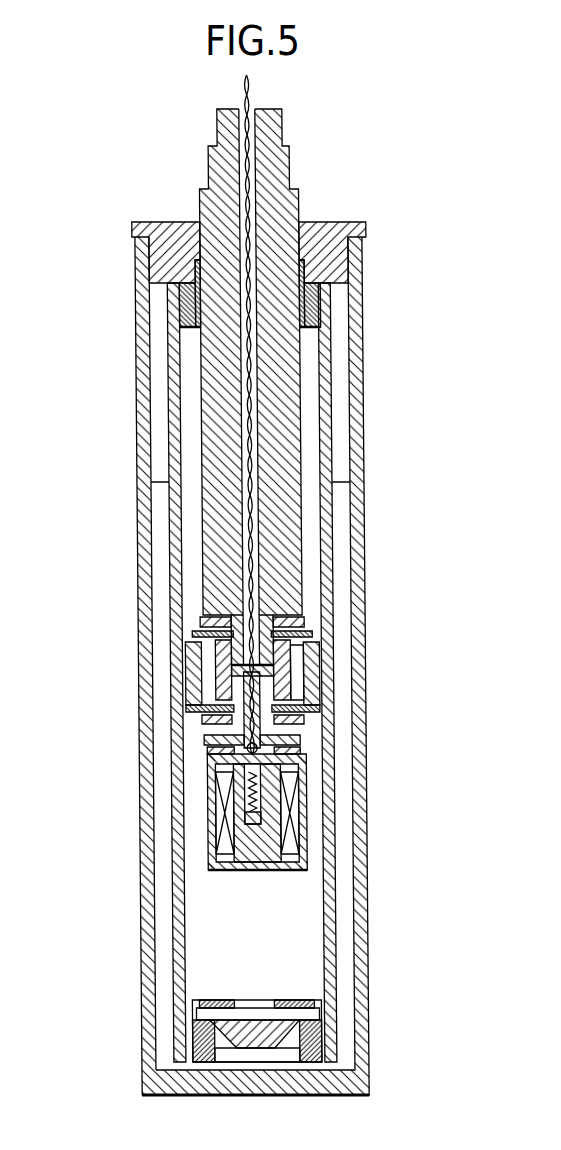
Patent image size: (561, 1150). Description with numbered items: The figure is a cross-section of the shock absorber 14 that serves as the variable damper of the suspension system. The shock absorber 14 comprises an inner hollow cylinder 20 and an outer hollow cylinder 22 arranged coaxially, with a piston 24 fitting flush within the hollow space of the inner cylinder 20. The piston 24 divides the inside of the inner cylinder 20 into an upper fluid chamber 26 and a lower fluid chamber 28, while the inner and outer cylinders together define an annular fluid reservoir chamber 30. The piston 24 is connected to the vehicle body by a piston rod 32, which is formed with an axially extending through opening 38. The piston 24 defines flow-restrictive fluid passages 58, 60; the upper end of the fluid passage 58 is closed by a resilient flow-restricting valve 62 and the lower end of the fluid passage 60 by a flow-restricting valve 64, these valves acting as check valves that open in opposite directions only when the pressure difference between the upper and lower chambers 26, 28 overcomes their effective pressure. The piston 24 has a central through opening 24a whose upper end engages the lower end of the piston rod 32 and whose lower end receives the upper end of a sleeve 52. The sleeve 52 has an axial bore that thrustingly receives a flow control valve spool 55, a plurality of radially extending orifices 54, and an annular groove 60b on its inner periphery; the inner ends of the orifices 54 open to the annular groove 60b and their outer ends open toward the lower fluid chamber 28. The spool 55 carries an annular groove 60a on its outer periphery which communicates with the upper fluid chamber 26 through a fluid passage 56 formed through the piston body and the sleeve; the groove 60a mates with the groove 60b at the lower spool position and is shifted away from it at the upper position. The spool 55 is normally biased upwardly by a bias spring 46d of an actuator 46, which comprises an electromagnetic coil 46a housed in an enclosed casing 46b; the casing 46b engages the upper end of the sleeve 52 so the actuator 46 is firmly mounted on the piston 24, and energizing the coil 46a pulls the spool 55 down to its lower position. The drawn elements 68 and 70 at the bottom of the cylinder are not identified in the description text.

The shock absorber 14 is at (253, 585).
The inner hollow cylinder 20 is at (326, 398).
The outer hollow cylinder 22 is at (354, 362).
The piston 24 is at (237, 707).
The central through opening 24a is at (297, 648).
The upper fluid chamber 26 is at (183, 455).
The lower fluid chamber 28 is at (306, 925).
The annular fluid reservoir chamber 30 is at (149, 920).
The piston rod 32 is at (286, 125).
The through opening 38 is at (256, 497).
The actuator 46 is at (270, 832).
The electromagnetic coil 46a is at (282, 848).
The enclosed casing 46b is at (298, 790).
The bias spring 46d is at (243, 802).
The sleeve 52 is at (302, 716).
The radially extending orifices 54 is at (282, 727).
The flow control valve spool 55 is at (294, 747).
The fluid passage 56 is at (297, 676).
The flow-restrictive fluid passage 58 is at (294, 688).
The flow-restrictive fluid passage 60 is at (201, 688).
The annular groove 60a is at (214, 727).
The annular groove 60b is at (199, 762).
The flow-restricting valve 62 is at (310, 621).
The flow-restricting valve 64 is at (196, 713).
The spring support 68 is at (312, 1004).
The spring plate 70 is at (298, 1025).